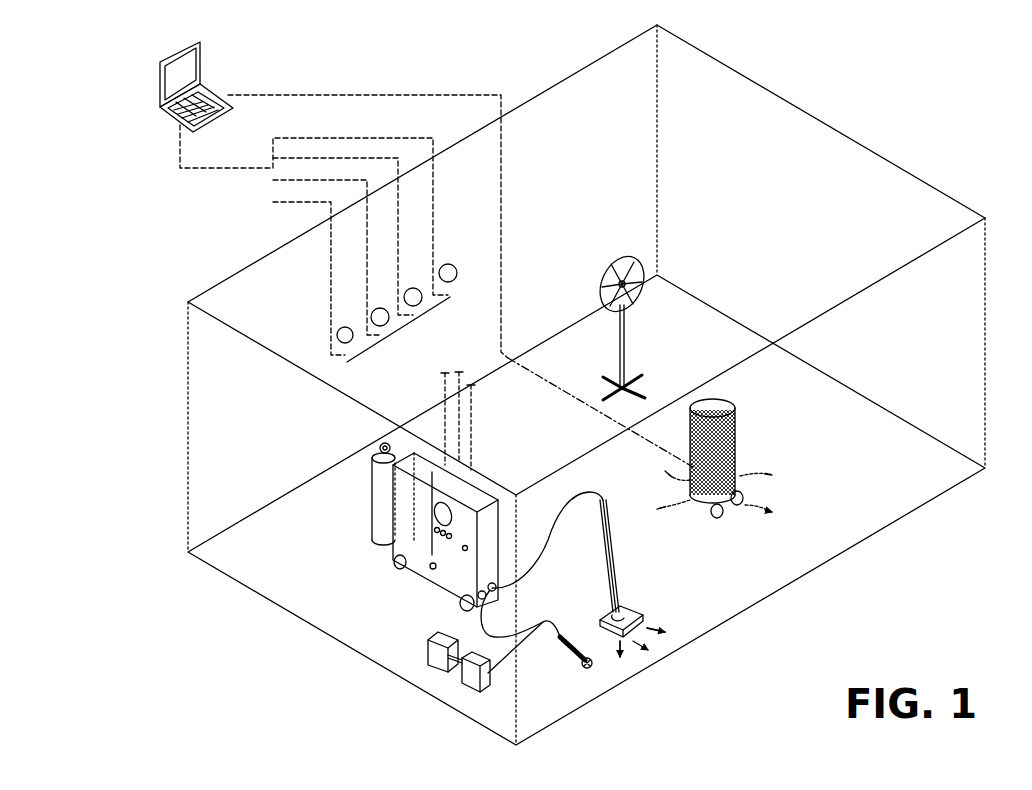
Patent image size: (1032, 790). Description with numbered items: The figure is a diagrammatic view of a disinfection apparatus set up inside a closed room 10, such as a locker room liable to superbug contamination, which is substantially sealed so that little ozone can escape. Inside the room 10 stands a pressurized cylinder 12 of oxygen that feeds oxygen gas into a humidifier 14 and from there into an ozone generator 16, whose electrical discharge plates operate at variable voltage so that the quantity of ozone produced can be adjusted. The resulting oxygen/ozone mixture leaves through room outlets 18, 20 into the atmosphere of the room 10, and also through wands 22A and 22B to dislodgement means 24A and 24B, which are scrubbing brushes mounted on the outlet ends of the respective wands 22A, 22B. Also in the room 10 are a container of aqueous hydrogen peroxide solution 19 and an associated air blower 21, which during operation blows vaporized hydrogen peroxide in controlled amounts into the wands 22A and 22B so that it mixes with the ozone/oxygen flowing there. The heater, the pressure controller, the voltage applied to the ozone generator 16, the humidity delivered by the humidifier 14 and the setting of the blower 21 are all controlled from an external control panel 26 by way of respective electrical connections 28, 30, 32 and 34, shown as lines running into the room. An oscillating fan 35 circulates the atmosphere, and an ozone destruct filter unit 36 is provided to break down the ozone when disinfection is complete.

The room 10 is at (824, 567).
The pressurized cylinder 12 is at (431, 502).
The humidifier 14 is at (400, 537).
The ozone generator 16 is at (450, 573).
The room outlet 18 is at (430, 569).
The container of aqueous hydrogen peroxide solution 19 is at (466, 690).
The room outlet 20 is at (468, 547).
The air blower 21 is at (430, 668).
The wand 22A is at (487, 632).
The wand 22B is at (530, 580).
The dislodgement means 24A is at (560, 642).
The dislodgement means 24B is at (613, 590).
The external control panel 26 is at (213, 122).
The electrical connection 28 is at (333, 298).
The electrical connection 30 is at (434, 237).
The electrical connection 32 is at (402, 258).
The electrical connection 34 is at (367, 280).
The oscillating fan 35 is at (616, 357).
The ozone destruct filter unit 36 is at (740, 448).